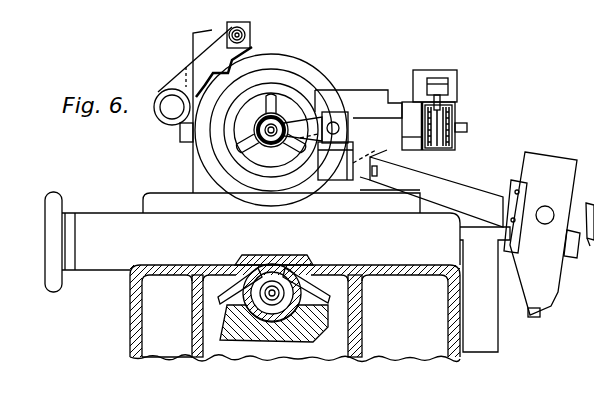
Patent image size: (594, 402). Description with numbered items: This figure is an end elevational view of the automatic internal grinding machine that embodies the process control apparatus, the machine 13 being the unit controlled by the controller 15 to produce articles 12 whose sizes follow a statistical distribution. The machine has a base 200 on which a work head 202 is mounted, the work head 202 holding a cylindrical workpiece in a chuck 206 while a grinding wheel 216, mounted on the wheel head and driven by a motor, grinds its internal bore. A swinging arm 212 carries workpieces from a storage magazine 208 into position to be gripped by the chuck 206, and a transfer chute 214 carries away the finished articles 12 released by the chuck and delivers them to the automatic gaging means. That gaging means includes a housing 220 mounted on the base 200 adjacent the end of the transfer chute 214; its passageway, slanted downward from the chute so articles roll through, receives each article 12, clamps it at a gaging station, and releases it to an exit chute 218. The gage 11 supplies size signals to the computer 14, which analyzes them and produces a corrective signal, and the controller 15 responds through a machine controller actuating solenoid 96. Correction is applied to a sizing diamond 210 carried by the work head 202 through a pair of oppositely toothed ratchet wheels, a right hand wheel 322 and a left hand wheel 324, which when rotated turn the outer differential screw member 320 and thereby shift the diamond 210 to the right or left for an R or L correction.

The gage 11 is at (552, 306).
The articles 12 is at (268, 148).
The machine 13 is at (165, 362).
The computer 14 is at (487, 343).
The controller 15 is at (438, 68).
The machine controller actuating solenoid 96 is at (448, 87).
The base 200 is at (128, 349).
The work head 202 is at (308, 64).
The chuck 206 is at (292, 95).
The storage magazine 208 is at (250, 33).
The sizing diamond 210 is at (325, 89).
The swinging arm 212 is at (193, 57).
The transfer chute 214 is at (475, 193).
The grinding wheel 216 is at (193, 154).
The exit chute 218 is at (591, 247).
The housing 220 is at (548, 163).
The outer differential screw member 320 is at (468, 128).
The right hand ratchet wheel 322 is at (350, 155).
The left hand ratchet wheel 324 is at (453, 112).